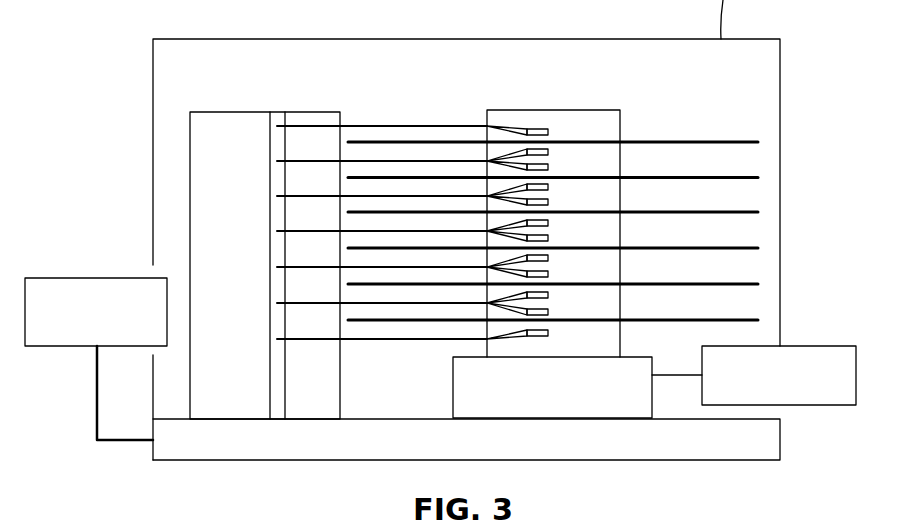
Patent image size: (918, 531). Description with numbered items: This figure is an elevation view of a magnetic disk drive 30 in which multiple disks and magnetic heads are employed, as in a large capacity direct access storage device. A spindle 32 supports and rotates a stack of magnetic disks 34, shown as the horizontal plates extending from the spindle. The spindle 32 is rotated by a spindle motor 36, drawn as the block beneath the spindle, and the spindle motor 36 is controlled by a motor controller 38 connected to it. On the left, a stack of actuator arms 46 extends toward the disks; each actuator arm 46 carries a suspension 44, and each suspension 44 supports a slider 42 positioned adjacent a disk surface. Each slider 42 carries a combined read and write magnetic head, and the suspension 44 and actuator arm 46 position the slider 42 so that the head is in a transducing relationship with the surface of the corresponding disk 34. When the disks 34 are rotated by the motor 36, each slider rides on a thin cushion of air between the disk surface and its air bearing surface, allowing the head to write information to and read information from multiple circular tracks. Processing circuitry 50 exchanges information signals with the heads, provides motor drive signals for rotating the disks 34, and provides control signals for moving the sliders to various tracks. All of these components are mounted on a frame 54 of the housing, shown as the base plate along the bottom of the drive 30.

The magnetic disk drive 30 is at (669, 112).
The spindle 32 is at (607, 110).
The magnetic disk 34 is at (750, 144).
The spindle motor 36 is at (566, 399).
The motor controller 38 is at (814, 406).
The slider 42 is at (550, 153).
The suspension 44 is at (520, 150).
The actuator arm 46 is at (463, 161).
The processing circuitry 50 is at (68, 277).
The frame 54 is at (205, 461).